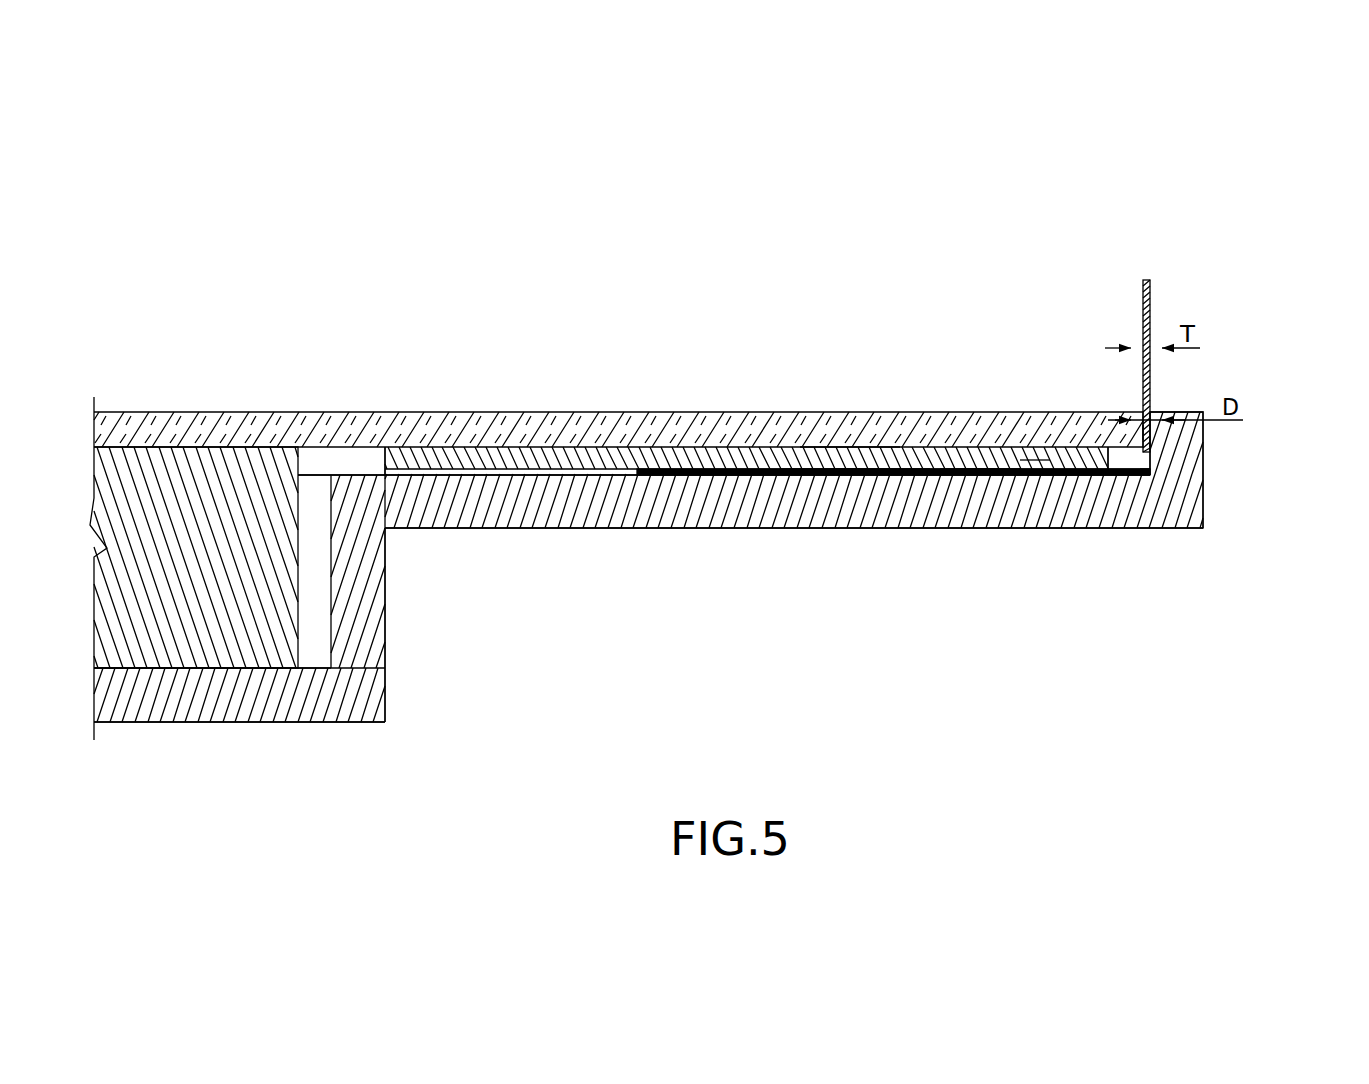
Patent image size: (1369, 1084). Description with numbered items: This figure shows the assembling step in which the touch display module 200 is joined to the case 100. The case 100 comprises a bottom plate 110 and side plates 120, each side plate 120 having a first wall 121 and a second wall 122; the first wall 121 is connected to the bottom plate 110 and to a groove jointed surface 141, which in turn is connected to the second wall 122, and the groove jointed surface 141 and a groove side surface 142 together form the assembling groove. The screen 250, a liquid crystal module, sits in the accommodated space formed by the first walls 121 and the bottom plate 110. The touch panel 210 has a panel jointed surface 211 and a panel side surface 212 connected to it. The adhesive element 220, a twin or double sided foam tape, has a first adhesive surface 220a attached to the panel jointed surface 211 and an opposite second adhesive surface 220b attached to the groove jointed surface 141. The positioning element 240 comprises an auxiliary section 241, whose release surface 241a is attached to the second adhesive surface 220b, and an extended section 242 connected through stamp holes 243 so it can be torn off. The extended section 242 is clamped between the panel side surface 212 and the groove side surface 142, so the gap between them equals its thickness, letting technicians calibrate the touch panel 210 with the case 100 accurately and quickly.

The case 100 is at (412, 738).
The bottom plate 110 is at (203, 708).
The side plate 120 is at (820, 527).
The first wall 121 is at (357, 617).
The second wall 122 is at (1188, 450).
The groove jointed surface 141 is at (818, 463).
The groove side surface 142 is at (1141, 432).
The touch display module 200 is at (635, 398).
The touch panel 210 is at (983, 453).
The panel jointed surface 211 is at (986, 472).
The panel side surface 212 is at (1152, 440).
The adhesive element 220 is at (725, 453).
The first adhesive surface 220a is at (840, 440).
The second adhesive surface 220b is at (877, 476).
The positioning element 240 is at (1120, 386).
The auxiliary section 241 is at (944, 470).
The release surface 241a is at (1035, 455).
The extended section 242 is at (1150, 320).
The stamp holes 243 is at (1140, 458).
The screen 250 is at (248, 657).